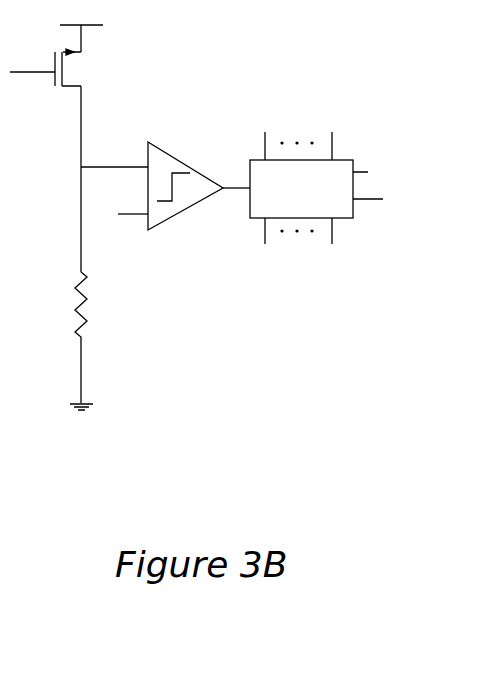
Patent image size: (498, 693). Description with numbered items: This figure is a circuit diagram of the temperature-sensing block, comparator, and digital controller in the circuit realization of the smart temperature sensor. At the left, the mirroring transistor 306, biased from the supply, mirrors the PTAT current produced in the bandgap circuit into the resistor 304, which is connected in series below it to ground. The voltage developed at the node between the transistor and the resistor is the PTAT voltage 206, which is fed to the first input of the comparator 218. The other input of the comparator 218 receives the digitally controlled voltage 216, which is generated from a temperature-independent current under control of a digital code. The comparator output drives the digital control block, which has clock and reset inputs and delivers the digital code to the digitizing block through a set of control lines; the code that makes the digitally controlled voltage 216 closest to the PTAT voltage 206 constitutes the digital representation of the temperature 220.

The M5 transistor 306 is at (116, 60).
The PTAT voltage VPTAT 206 is at (137, 165).
The comparator 218 is at (158, 147).
The digitally controlled voltage VO 216 is at (128, 215).
The digital representation of the temperature 220 is at (305, 148).
The resistor RP 304 is at (72, 285).